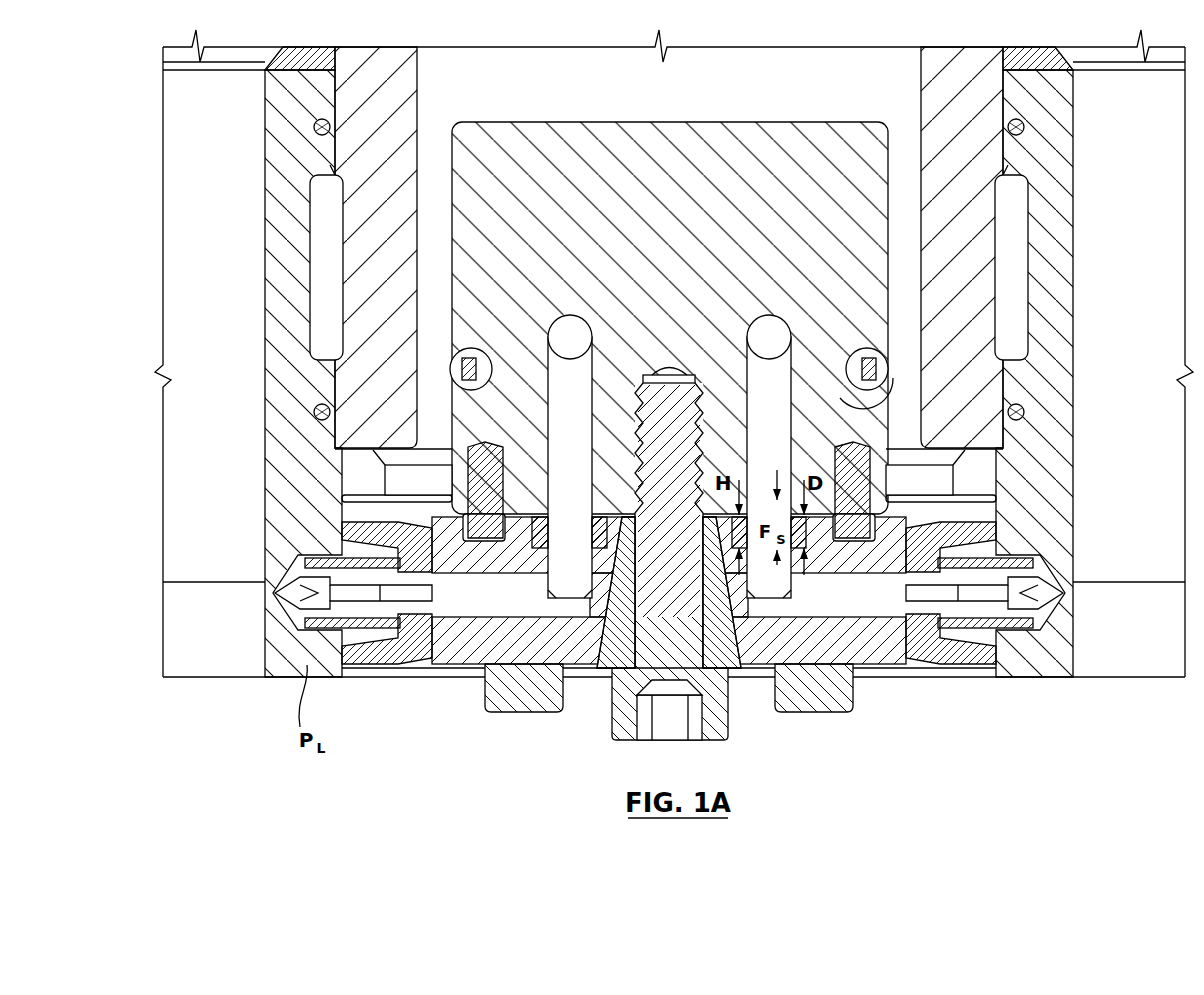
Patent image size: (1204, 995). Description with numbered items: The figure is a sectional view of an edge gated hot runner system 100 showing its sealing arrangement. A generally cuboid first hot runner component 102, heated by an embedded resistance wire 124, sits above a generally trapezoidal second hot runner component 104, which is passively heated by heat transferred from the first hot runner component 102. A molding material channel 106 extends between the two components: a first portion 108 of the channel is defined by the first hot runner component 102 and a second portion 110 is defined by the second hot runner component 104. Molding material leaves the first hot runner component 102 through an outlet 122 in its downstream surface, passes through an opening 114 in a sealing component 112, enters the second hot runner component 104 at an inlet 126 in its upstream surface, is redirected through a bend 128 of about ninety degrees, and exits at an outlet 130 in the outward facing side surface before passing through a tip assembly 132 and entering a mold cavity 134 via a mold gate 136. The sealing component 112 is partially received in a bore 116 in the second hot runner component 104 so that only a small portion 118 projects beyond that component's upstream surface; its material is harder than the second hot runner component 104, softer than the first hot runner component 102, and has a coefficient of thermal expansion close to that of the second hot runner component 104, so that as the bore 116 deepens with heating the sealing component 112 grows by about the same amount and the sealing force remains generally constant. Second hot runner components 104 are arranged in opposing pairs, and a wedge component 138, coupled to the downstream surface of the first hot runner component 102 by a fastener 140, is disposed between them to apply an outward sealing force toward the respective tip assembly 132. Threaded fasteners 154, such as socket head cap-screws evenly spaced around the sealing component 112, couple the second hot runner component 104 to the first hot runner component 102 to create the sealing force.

The hot runner system 100 is at (1099, 260).
The first hot runner component 102 is at (846, 140).
The second hot runner component 104 is at (885, 652).
The molding material channel 106 is at (985, 355).
The first portion of molding material channel 108 is at (716, 369).
The second portion of molding material channel 110 is at (914, 376).
The sealing component 112 is at (540, 540).
The opening 114 is at (573, 540).
The bore 116 is at (470, 513).
The portion of sealing component 118 is at (612, 520).
The outlet 122 is at (757, 515).
The embedded resistance wire 124 is at (885, 373).
The inlet 126 is at (710, 575).
The bend 128 is at (760, 553).
The outlet 130 is at (895, 605).
The tip assembly 132 is at (1000, 500).
The mold cavity 134 is at (1072, 645).
The mold gate 136 is at (1072, 590).
The wedge component 138 is at (608, 655).
The fastener 140 is at (662, 623).
The threaded fastener 154 is at (525, 690).